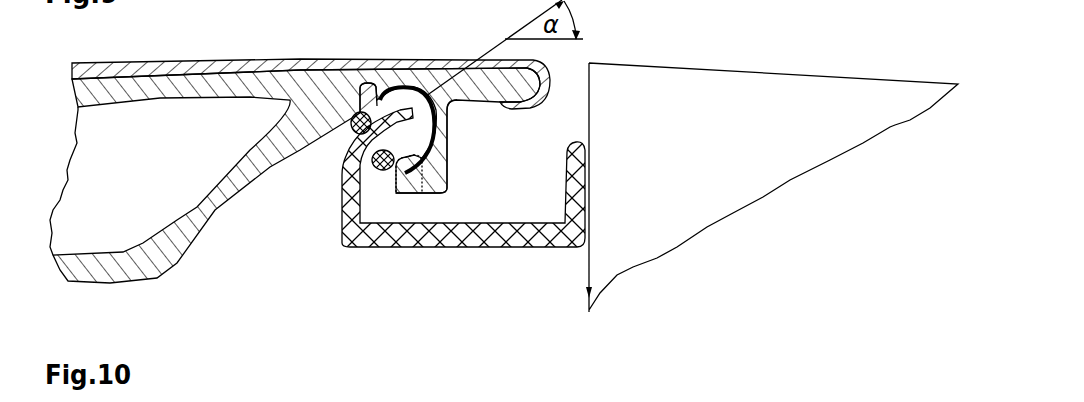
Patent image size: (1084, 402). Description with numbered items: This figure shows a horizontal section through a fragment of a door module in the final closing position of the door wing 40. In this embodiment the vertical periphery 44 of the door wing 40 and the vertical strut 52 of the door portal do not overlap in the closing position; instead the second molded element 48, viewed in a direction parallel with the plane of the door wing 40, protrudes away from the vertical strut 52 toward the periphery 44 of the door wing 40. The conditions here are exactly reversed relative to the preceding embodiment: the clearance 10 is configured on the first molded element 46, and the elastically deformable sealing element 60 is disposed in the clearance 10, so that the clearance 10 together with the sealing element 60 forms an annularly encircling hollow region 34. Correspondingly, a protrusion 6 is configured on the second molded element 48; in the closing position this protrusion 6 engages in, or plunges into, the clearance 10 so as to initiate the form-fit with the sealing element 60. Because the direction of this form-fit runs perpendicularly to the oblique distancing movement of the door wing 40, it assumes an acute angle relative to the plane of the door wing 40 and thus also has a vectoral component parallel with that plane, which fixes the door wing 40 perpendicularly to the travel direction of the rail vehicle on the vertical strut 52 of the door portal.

The door wing 40 is at (189, 82).
The vertical periphery 44 is at (452, 73).
The first molded element 46 is at (448, 148).
The annularly encircling hollow region 34 is at (368, 86).
The protrusion 6 is at (380, 121).
The sealing element 60 is at (383, 172).
The second molded element 48 is at (507, 236).
The vertical strut 52 is at (803, 164).
The clearance 10 is at (332, 150).